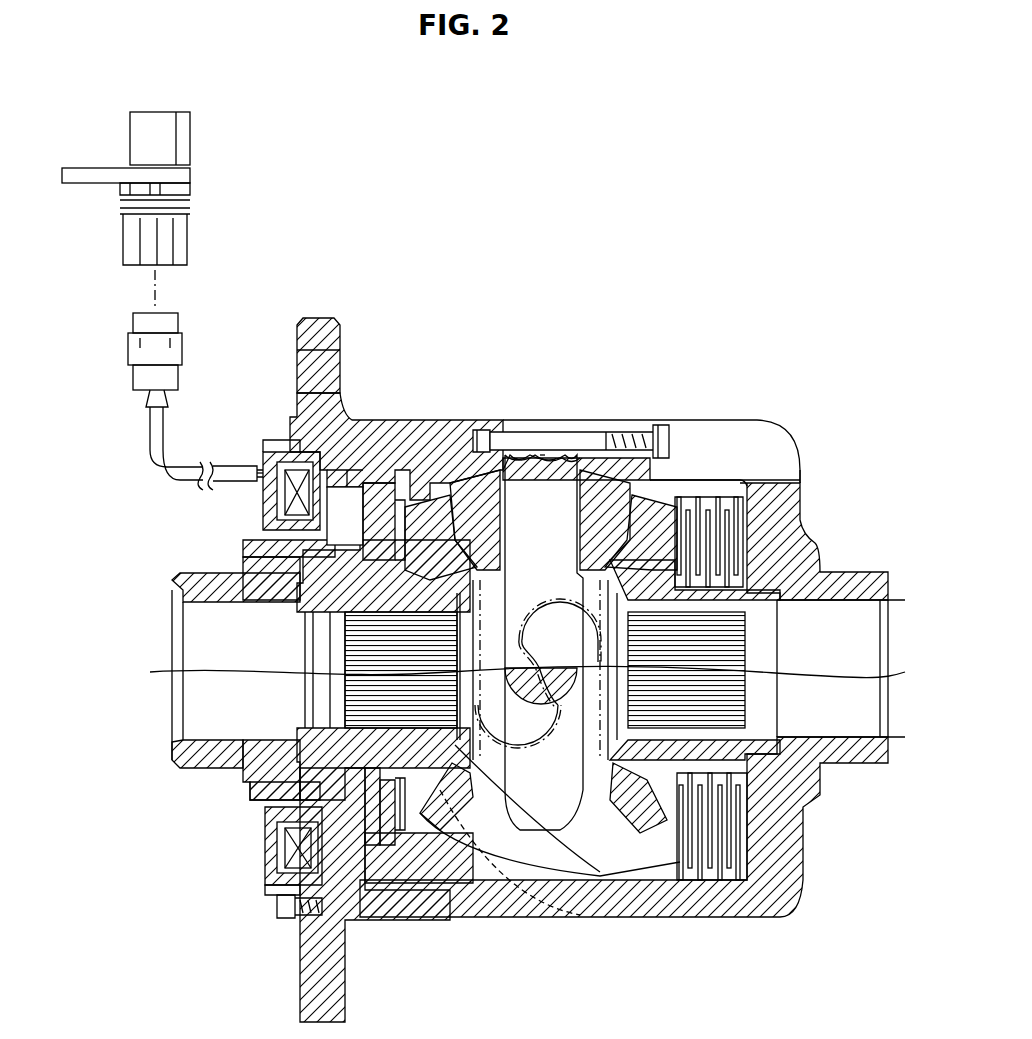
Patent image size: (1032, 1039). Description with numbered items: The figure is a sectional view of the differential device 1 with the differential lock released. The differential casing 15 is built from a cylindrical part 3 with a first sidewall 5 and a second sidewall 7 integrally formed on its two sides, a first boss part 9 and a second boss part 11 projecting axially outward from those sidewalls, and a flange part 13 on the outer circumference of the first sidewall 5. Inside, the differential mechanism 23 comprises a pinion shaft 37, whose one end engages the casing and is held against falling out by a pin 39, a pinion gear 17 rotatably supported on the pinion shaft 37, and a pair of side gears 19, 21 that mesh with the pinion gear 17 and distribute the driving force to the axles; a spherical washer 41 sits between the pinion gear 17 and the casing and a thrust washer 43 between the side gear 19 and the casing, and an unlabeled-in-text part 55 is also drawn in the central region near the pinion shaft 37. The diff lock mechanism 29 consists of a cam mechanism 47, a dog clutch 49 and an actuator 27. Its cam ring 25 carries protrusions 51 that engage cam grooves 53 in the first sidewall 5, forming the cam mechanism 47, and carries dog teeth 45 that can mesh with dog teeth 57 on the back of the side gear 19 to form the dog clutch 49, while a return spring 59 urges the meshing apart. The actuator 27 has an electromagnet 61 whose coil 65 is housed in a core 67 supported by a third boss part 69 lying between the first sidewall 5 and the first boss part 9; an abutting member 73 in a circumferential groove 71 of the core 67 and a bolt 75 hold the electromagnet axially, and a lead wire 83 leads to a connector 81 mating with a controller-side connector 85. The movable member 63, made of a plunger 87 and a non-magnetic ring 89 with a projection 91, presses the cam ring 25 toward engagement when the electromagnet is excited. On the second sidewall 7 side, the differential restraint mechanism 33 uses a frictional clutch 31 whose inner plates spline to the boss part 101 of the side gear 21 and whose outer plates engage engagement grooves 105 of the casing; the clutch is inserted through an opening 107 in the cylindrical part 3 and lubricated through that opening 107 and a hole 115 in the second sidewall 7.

The differential device 1 is at (565, 205).
The cylindrical part 3 is at (705, 428).
The first sidewall 5 is at (283, 440).
The second sidewall 7 is at (800, 470).
The first boss part 9 is at (175, 585).
The second boss part 11 is at (848, 582).
The flange part 13 is at (330, 325).
The differential casing 15 is at (432, 418).
The pinion gear 17 is at (470, 470).
The side gear 19 is at (455, 812).
The side gear 21 is at (640, 825).
The differential mechanism 23 is at (525, 845).
The cam ring 25 is at (378, 845).
The actuator 27 is at (215, 420).
The diff lock mechanism 29 is at (268, 262).
The frictional clutch 31 is at (710, 888).
The differential restraint mechanism 33 is at (752, 328).
The pinion shaft 37 is at (525, 490).
The pin 39 is at (560, 440).
The spherical washer 41 is at (612, 445).
The thrust washer 43 is at (470, 745).
The dog teeth 45 is at (405, 850).
The cam mechanism 47 is at (355, 470).
The dog clutch 49 is at (390, 495).
The protrusions 51 is at (362, 527).
The cam grooves 53 is at (350, 485).
The pinion shaft 55 is at (455, 585).
The dog teeth 57 is at (425, 845).
The return spring 59 is at (470, 790).
The electromagnet 61 is at (240, 872).
The movable member 63 is at (240, 537).
The coil 65 is at (290, 845).
The core 67 is at (262, 810).
The third boss part 69 is at (300, 755).
The circumferential groove 71 is at (275, 455).
The abutting member 73 is at (292, 925).
The bolt 75 is at (305, 935).
The connector 81 is at (128, 345).
The lead wire 83 is at (150, 430).
The connector 85 is at (130, 120).
The plunger 87 is at (262, 605).
The ring 89 is at (255, 770).
The projection 91 is at (300, 612).
The boss part 101 is at (600, 745).
The engagement grooves 105 is at (712, 490).
The opening 107 is at (580, 915).
The hole 115 is at (770, 860).